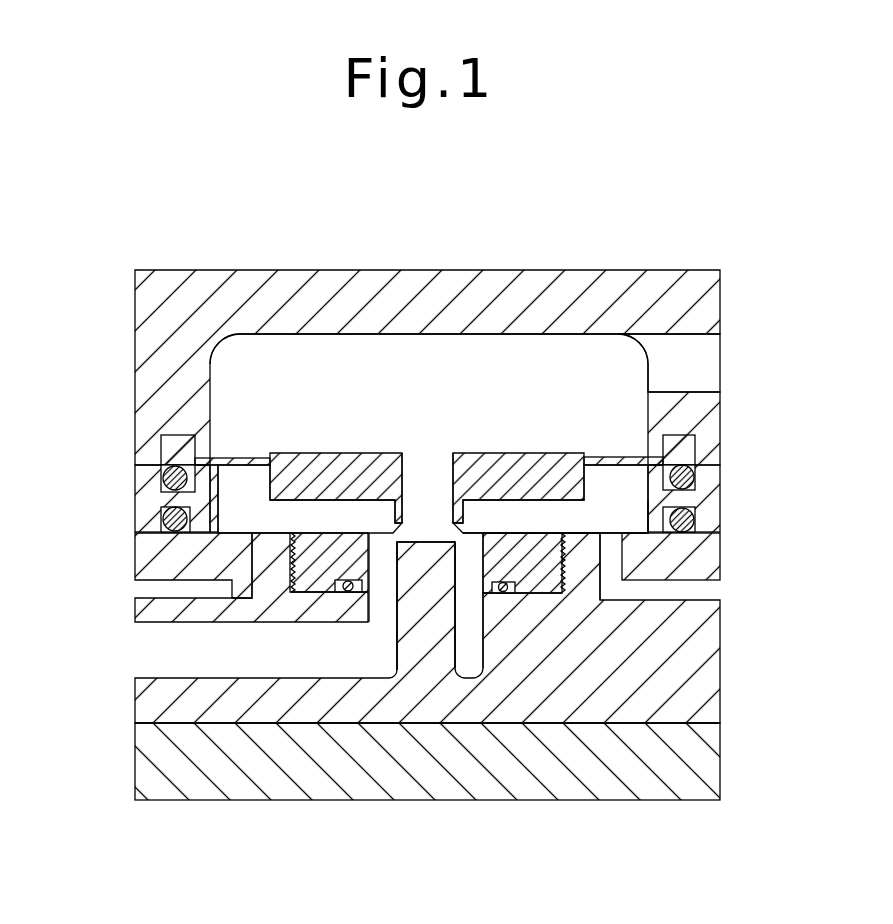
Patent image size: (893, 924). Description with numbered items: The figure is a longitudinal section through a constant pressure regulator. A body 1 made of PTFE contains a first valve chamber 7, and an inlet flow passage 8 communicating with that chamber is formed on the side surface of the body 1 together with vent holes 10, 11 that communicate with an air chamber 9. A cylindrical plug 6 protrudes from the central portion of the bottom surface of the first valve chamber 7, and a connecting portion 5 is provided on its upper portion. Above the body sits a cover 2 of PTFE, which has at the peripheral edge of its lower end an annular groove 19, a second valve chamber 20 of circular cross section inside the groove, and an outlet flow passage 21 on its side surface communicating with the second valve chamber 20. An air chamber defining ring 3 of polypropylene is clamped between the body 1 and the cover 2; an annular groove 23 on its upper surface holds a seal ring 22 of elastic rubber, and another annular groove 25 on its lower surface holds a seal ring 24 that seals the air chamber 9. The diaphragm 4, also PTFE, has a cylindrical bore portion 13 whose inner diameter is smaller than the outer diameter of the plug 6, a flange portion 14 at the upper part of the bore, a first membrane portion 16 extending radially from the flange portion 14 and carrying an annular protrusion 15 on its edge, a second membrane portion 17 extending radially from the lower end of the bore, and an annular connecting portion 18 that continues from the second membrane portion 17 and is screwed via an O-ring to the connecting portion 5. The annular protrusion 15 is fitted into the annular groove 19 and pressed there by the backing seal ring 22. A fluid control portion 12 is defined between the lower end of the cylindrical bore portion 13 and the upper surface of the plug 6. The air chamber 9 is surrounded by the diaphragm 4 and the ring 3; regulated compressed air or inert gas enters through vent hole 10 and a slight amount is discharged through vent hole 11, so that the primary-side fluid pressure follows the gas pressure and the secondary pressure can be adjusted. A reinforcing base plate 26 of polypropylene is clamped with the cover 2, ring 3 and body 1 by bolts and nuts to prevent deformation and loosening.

The body 1 is at (408, 707).
The cover 2 is at (430, 298).
The air chamber defining ring 3 is at (160, 520).
The diaphragm 4 is at (478, 394).
The connecting portion 5 is at (572, 585).
The cylindrical plug 6 is at (432, 628).
The first valve chamber 7 is at (378, 652).
The inlet flow passage 8 is at (187, 745).
The air chamber 9 is at (232, 492).
The vent hole 10 is at (635, 593).
The vent hole 11 is at (150, 590).
The fluid control portion 12 is at (388, 543).
The cylindrical bore portion 13 is at (407, 520).
The flange portion 14 is at (335, 470).
The annular protrusion 15 is at (697, 436).
The first membrane portion 16 is at (612, 457).
The second membrane portion 17 is at (480, 530).
The annular connecting portion 18 is at (280, 622).
The annular groove 19 is at (160, 450).
The second valve chamber 20 is at (482, 392).
The outlet flow passage 21 is at (683, 362).
The seal ring 22 is at (700, 477).
The annular groove 23 is at (160, 478).
The seal ring 24 is at (703, 524).
The annular groove 25 is at (160, 505).
The reinforcing base plate 26 is at (175, 765).